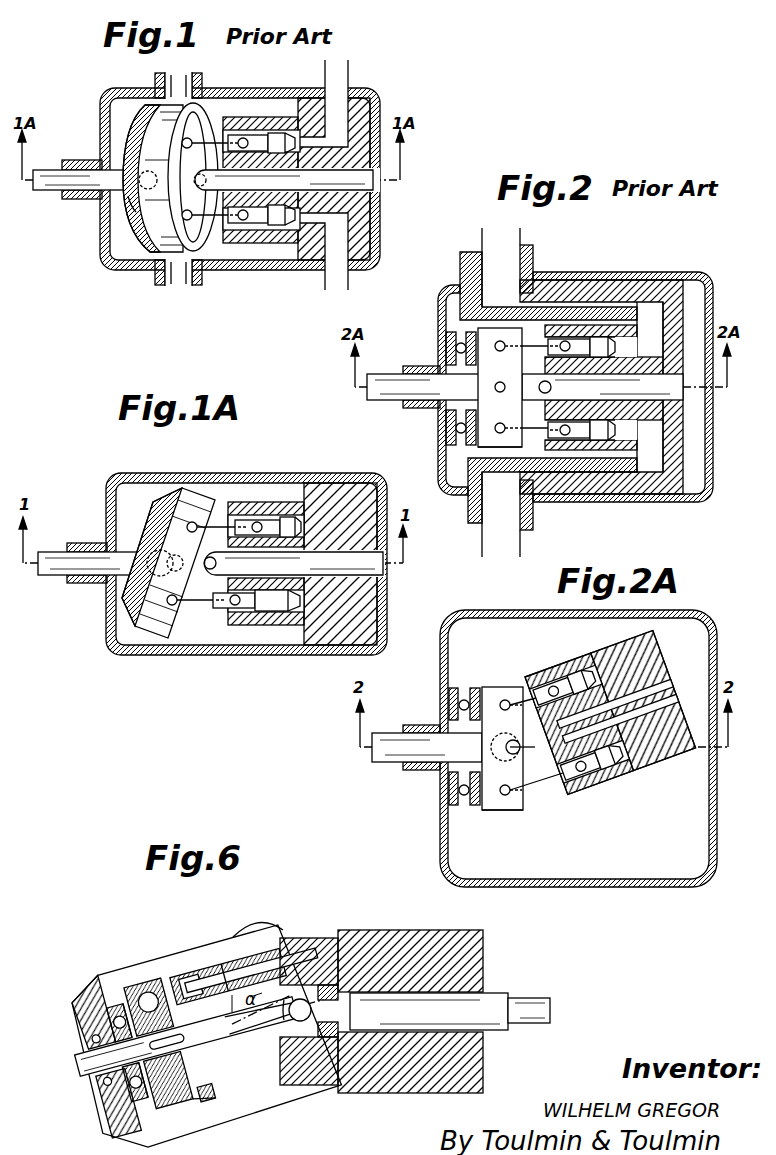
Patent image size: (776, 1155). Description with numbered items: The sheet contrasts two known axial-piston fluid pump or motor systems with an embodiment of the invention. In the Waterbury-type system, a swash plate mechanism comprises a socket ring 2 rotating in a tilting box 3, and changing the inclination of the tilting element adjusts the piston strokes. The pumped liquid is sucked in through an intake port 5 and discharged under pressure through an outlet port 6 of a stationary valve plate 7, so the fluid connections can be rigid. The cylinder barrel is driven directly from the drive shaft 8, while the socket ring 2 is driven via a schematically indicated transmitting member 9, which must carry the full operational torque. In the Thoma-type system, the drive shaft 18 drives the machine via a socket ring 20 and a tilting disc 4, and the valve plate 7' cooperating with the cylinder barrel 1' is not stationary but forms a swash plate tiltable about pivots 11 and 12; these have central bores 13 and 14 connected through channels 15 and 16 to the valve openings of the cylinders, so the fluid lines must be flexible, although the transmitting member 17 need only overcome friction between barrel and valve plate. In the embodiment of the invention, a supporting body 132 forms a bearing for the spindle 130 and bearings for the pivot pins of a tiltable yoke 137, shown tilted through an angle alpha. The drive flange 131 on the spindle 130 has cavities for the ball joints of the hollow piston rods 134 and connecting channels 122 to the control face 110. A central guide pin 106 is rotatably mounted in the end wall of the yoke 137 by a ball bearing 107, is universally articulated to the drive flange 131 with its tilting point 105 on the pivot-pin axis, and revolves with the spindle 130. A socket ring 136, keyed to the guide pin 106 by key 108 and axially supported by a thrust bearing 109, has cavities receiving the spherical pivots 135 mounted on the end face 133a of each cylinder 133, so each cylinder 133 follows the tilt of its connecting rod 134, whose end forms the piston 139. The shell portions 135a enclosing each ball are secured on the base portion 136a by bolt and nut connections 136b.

In FIG. 1, the socket ring 2 is at (198, 123).
In FIG. 1A, the socket ring 2 is at (192, 507).
In FIG. 1, the tilting box 3 is at (122, 143).
In FIG. 1A, the tilting box 3 is at (152, 522).
In FIG. 1, the intake port 5 is at (343, 77).
In FIG. 1, the outlet port 6 is at (343, 283).
In FIG. 1, the valve plate 7 is at (247, 179).
In FIG. 1A, the valve plate 7 is at (246, 552).
In FIG. 2A, the valve plate 7 is at (610, 712).
In FIG. 1, the drive shaft 8 is at (367, 185).
In FIG. 1A, the drive shaft 8 is at (373, 572).
In FIG. 1, the transmitting member 9 is at (133, 200).
In FIG. 2, the pivot 11 is at (527, 259).
In FIG. 2, the central bore 13 is at (508, 278).
In FIG. 2, the cylinder barrel 1' is at (604, 347).
In FIG. 2, the channel 15 is at (623, 300).
In FIG. 2, the valve plate 7' is at (575, 372).
In FIG. 2, the tilting disc 4 is at (478, 330).
In FIG. 2A, the tilting disc 4 is at (492, 687).
In FIG. 2, the drive shaft 18 is at (393, 371).
In FIG. 2A, the drive shaft 18 is at (398, 764).
In FIG. 2, the transmitting member 17 is at (532, 386).
In FIG. 2A, the transmitting member 17 is at (529, 755).
In FIG. 2, the socket ring 20 is at (505, 447).
In FIG. 2A, the socket ring 20 is at (498, 806).
In FIG. 2, the pivot 12 is at (538, 521).
In FIG. 2, the central bore 14 is at (515, 545).
In FIG. 2, the channel 16 is at (633, 474).
In FIG. 6, the tilting point 105 is at (345, 1000).
In FIG. 6, the central guide pin 106 is at (260, 1014).
In FIG. 6, the ball bearing 107 is at (119, 1103).
In FIG. 6, the key 108 is at (186, 1036).
In FIG. 6, the thrust bearing 109 is at (116, 1056).
In FIG. 6, the control face 110 is at (343, 1070).
In FIG. 6, the connecting channels 122 is at (343, 963).
In FIG. 6, the spindle 130 is at (492, 998).
In FIG. 6, the drive flange 131 is at (263, 927).
In FIG. 6, the supporting body 132 is at (385, 937).
In FIG. 6, the cylinder 133 is at (228, 976).
In FIG. 6, the end face 133a is at (191, 986).
In FIG. 6, the hollow piston rod 134 is at (251, 970).
In FIG. 6, the spherical pivot 135 is at (158, 1043).
In FIG. 6, the shell portions 135a is at (148, 1002).
In FIG. 6, the socket ring 136 is at (135, 1051).
In FIG. 6, the base portion 136a is at (204, 1098).
In FIG. 6, the bolt and nut connections 136b is at (206, 1092).
In FIG. 6, the tiltable yoke 137 is at (91, 1012).
In FIG. 6, the piston 139 is at (224, 977).